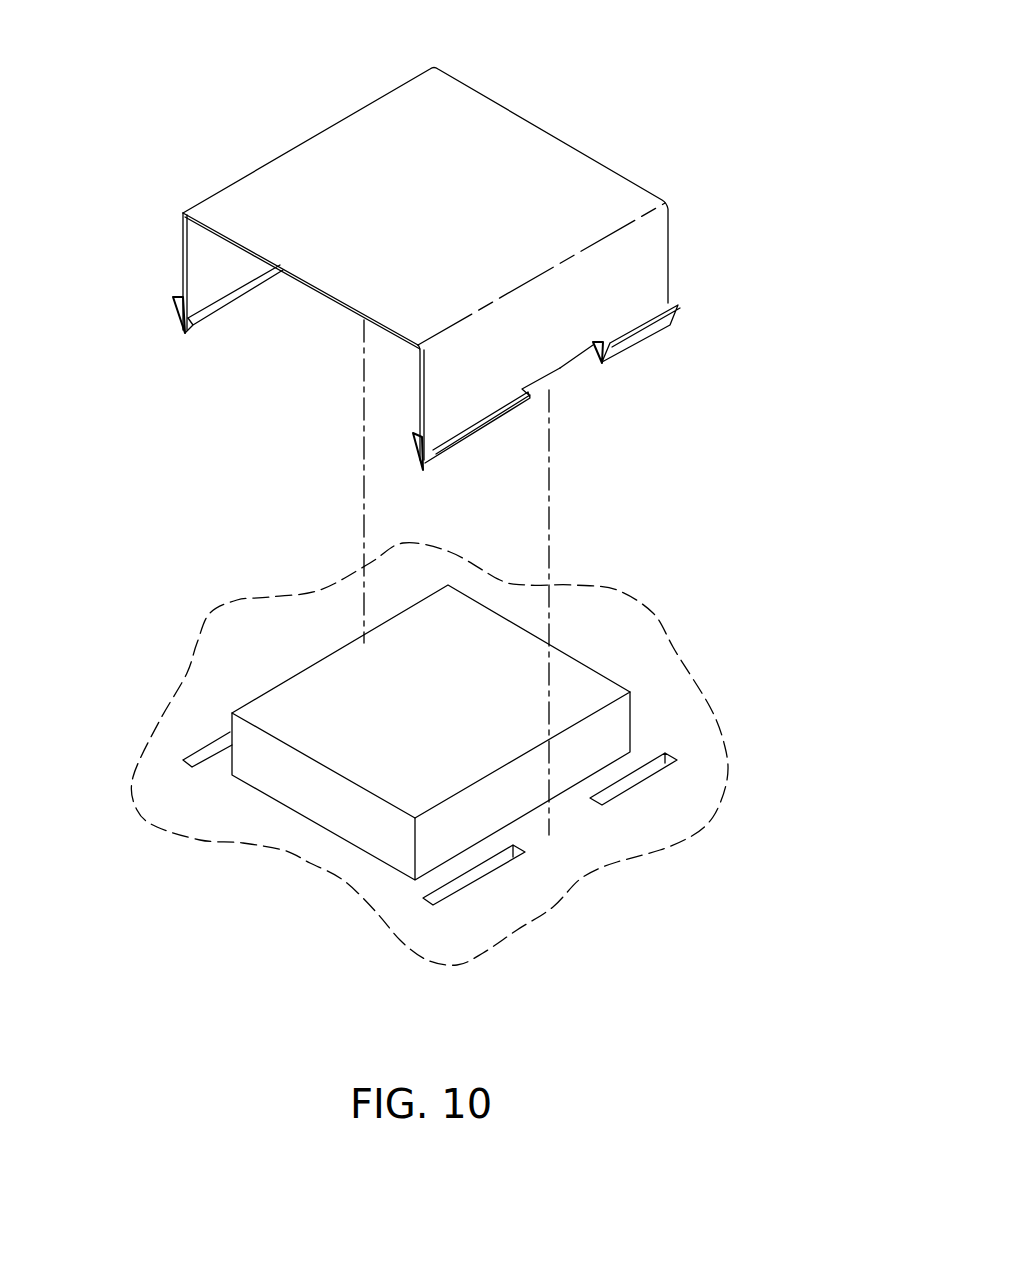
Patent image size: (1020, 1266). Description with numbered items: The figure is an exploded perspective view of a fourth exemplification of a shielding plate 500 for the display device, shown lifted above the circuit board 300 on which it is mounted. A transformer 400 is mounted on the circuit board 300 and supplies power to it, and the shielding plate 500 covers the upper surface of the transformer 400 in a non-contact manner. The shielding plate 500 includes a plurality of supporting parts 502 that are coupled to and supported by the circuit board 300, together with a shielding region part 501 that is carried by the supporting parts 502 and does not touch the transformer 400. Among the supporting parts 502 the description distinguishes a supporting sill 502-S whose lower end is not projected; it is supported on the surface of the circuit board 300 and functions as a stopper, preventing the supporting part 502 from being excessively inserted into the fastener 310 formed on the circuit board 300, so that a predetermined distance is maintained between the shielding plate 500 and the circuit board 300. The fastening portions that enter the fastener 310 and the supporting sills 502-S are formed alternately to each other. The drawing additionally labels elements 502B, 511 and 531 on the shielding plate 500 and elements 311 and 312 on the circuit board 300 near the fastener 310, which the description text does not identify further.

The shielding plate 500 is at (543, 101).
The shielding region part 501 is at (575, 168).
The supporting part 502 is at (567, 343).
The rear side wall of cover 502B is at (222, 280).
The supporting sill 502-S is at (557, 373).
The flange 511 is at (192, 330).
The engagement tab 531 is at (180, 303).
The transformer 400 is at (343, 793).
The circuit board 300 is at (313, 947).
The fastener 310 is at (447, 902).
The pad on substrate 311 is at (213, 743).
The pad on substrate 312 is at (487, 870).